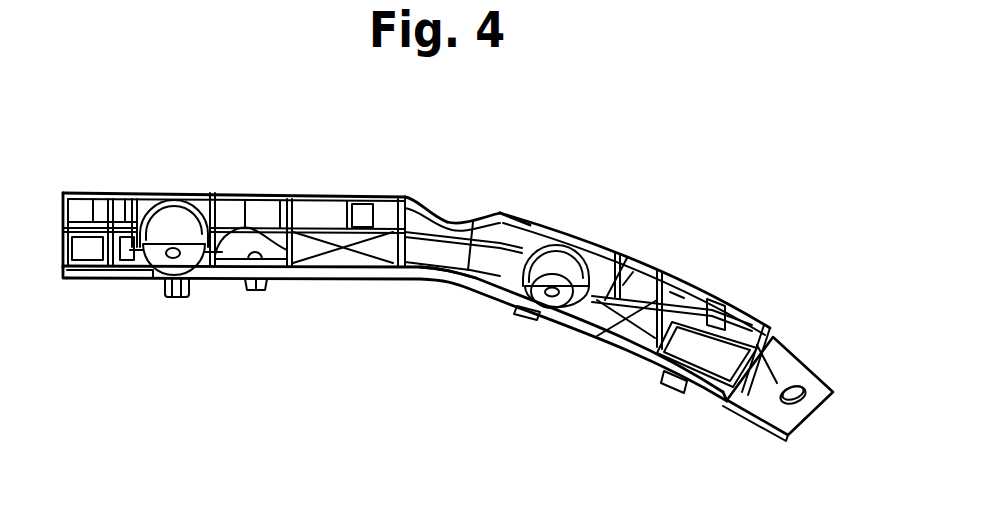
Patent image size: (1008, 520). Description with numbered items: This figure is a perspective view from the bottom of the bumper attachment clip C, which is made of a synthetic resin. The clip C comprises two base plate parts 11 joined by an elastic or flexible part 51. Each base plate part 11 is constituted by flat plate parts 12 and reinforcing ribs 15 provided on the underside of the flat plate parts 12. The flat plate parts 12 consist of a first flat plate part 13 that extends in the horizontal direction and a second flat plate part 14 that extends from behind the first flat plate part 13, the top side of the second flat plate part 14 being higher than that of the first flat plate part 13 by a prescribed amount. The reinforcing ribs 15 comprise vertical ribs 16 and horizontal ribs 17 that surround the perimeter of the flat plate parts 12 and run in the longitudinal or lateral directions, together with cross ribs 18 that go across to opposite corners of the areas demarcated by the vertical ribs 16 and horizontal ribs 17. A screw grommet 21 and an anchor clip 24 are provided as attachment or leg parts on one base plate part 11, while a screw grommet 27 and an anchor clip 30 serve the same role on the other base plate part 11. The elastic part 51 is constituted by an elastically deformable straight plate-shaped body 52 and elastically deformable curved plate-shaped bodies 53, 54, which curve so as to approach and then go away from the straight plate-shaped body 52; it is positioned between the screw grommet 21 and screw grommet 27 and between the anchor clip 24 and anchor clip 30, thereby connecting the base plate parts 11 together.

The base plate part 11 is at (80, 287).
The flat plate part 12 is at (140, 158).
The first flat plate part 13 is at (90, 226).
The second flat plate part 14 is at (128, 226).
The reinforcing ribs 15 is at (293, 144).
The vertical rib 16 is at (300, 210).
The horizontal rib 17 is at (115, 280).
The cross rib 18 is at (366, 208).
The screw grommet 21 is at (176, 299).
The anchor clip 24 is at (260, 293).
The screw grommet 27 is at (536, 307).
The anchor clip 30 is at (665, 378).
The elastic part 51 is at (428, 164).
The straight plate-shaped body 52 is at (460, 221).
The curved plate-shaped body 53 is at (430, 208).
The curved plate-shaped body 54 is at (487, 230).
The bumper attachment clip C is at (443, 291).